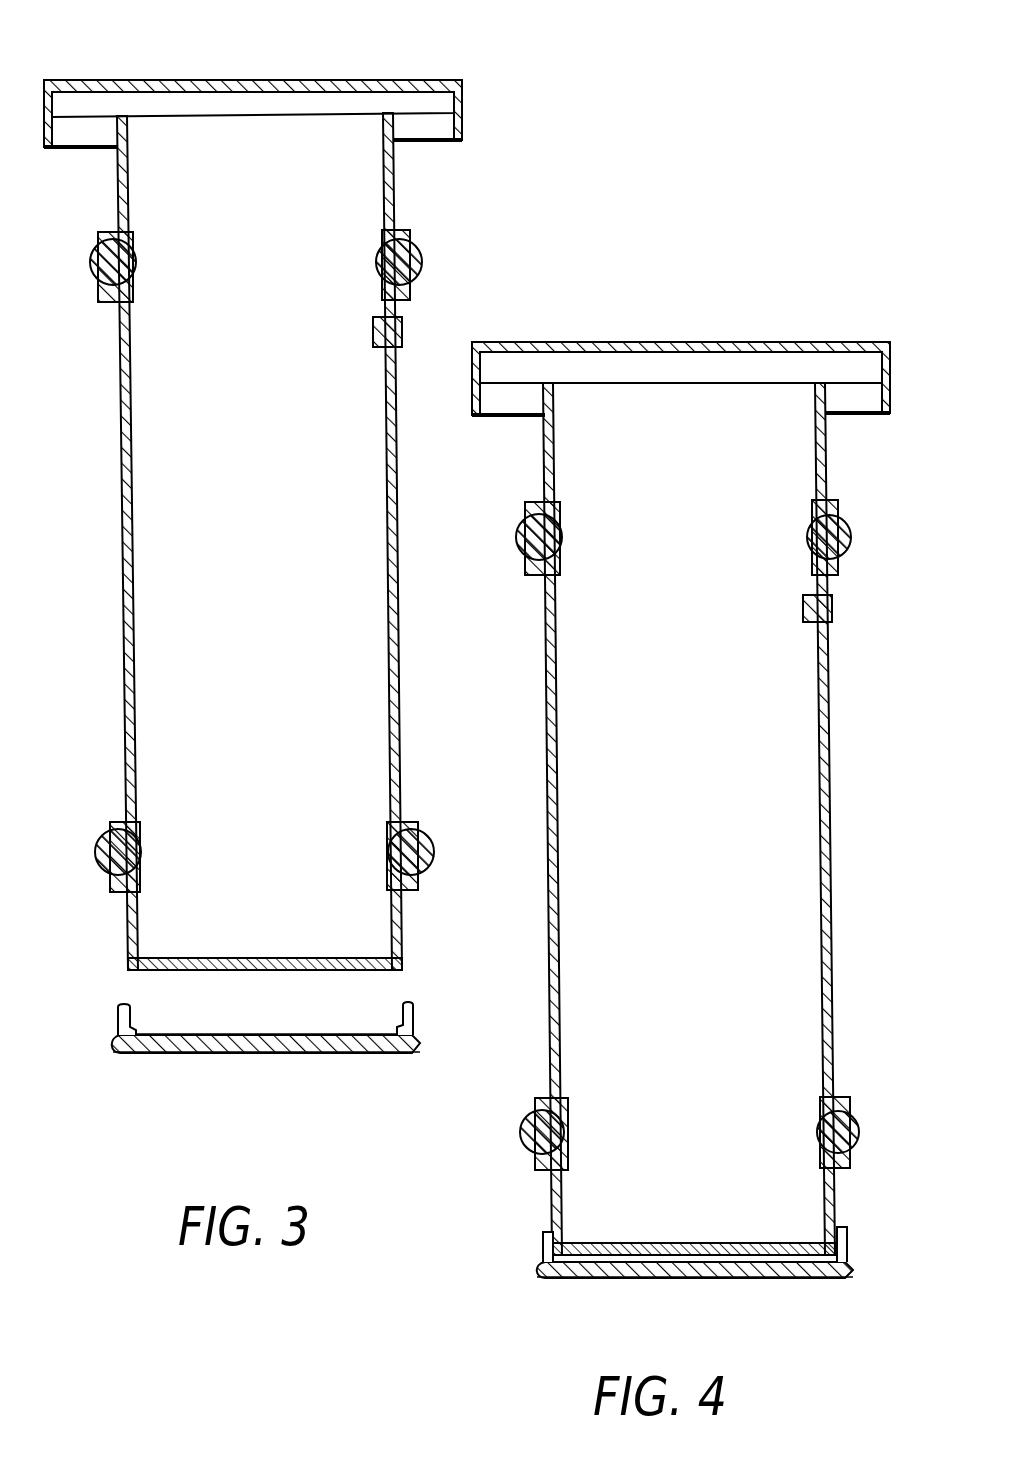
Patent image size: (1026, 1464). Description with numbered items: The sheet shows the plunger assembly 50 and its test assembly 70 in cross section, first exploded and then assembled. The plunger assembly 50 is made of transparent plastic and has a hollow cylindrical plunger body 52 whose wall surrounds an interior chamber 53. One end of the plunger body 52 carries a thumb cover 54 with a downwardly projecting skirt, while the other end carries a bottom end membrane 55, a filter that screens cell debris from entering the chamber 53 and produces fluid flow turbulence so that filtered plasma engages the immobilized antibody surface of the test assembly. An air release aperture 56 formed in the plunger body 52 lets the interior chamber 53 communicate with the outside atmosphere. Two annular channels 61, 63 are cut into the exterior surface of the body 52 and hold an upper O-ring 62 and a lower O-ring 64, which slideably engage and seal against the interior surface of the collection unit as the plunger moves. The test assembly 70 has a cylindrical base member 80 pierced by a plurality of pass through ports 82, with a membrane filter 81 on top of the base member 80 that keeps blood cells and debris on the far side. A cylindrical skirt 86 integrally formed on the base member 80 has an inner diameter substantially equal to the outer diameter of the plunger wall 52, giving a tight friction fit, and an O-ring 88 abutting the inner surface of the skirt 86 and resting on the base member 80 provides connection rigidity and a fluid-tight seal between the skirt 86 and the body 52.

In FIG. 3, the plunger assembly 50 is at (289, 541).
In FIG. 4, the plunger assembly 50 is at (705, 819).
In FIG. 3, the plunger body 52 is at (400, 695).
In FIG. 4, the plunger body 52 is at (832, 973).
In FIG. 3, the interior chamber 53 is at (277, 481).
In FIG. 4, the interior chamber 53 is at (704, 677).
In FIG. 3, the thumb cover 54 is at (337, 33).
In FIG. 4, the thumb cover 54 is at (702, 340).
In FIG. 3, the bottom end membrane 55 is at (275, 958).
In FIG. 4, the bottom end membrane 55 is at (722, 1243).
In FIG. 3, the air release aperture 56 is at (402, 337).
In FIG. 4, the air release aperture 56 is at (833, 608).
In FIG. 3, the annular channel 61 is at (383, 258).
In FIG. 3, the upper O-ring 62 is at (421, 261).
In FIG. 3, the annular channel 63 is at (387, 830).
In FIG. 3, the lower O-ring 64 is at (430, 852).
In FIG. 3, the test assembly 70 is at (399, 1059).
In FIG. 4, the test assembly 70 is at (838, 1282).
In FIG. 3, the base member 80 is at (258, 1024).
In FIG. 4, the base member 80 is at (665, 1273).
In FIG. 3, the membrane filter 81 is at (297, 1035).
In FIG. 3, the pass through ports 82 is at (180, 1053).
In FIG. 4, the pass through ports 82 is at (677, 1280).
In FIG. 3, the skirt 86 is at (443, 1028).
In FIG. 4, the skirt 86 is at (545, 1246).
In FIG. 3, the O-ring 88 is at (118, 1033).